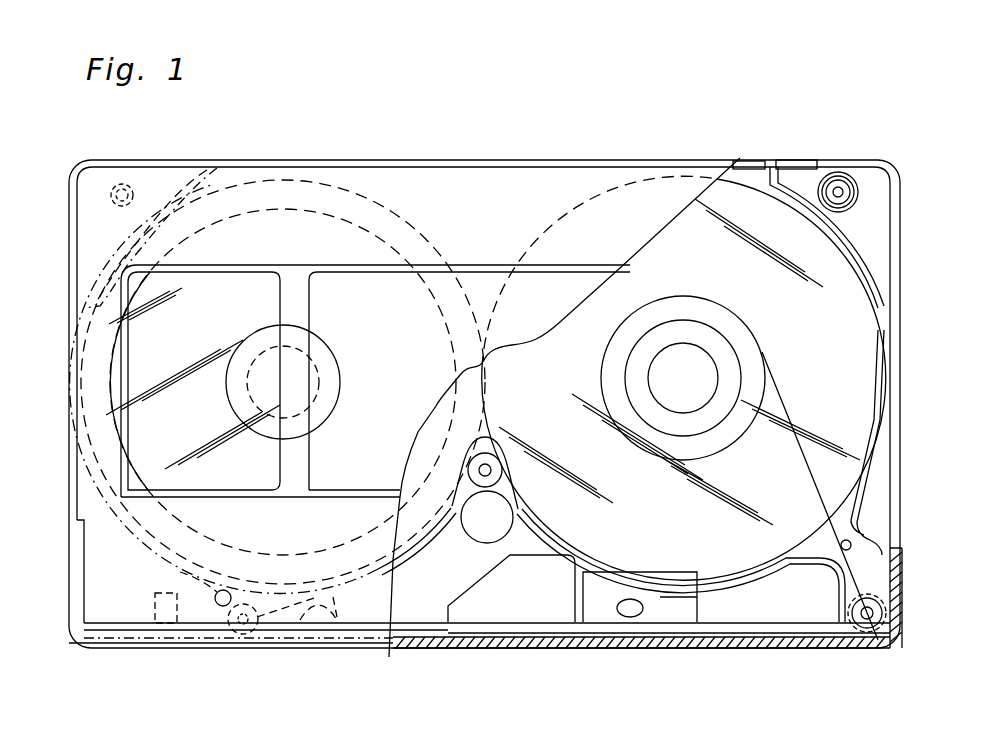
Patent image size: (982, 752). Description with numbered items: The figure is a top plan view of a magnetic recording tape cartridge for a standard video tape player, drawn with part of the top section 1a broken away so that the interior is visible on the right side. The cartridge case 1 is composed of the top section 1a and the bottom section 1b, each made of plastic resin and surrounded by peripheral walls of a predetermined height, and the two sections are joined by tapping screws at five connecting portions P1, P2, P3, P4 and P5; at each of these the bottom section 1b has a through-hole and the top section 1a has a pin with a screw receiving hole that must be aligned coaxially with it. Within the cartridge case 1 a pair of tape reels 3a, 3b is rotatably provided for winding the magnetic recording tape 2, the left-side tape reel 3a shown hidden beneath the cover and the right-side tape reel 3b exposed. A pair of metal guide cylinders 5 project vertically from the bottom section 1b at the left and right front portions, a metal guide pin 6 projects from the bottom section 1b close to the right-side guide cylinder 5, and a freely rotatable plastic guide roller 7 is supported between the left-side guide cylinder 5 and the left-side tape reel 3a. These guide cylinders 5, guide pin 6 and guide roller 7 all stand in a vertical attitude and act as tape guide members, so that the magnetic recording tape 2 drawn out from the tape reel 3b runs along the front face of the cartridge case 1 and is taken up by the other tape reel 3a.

The cartridge case 1 is at (553, 158).
The top section 1a is at (476, 173).
The bottom section 1b is at (897, 257).
The magnetic recording tape 2 is at (800, 456).
The tape reel 3a is at (470, 390).
The tape reel 3b is at (878, 386).
The guide cylinder 5 is at (250, 608).
The guide pin 6 is at (851, 543).
The guide roller 7 is at (186, 574).
The connecting portion P1 is at (498, 452).
The connecting portion P2 is at (858, 195).
The connecting portion P3 is at (123, 184).
The connecting portion P4 is at (230, 614).
The connecting portion P5 is at (875, 632).